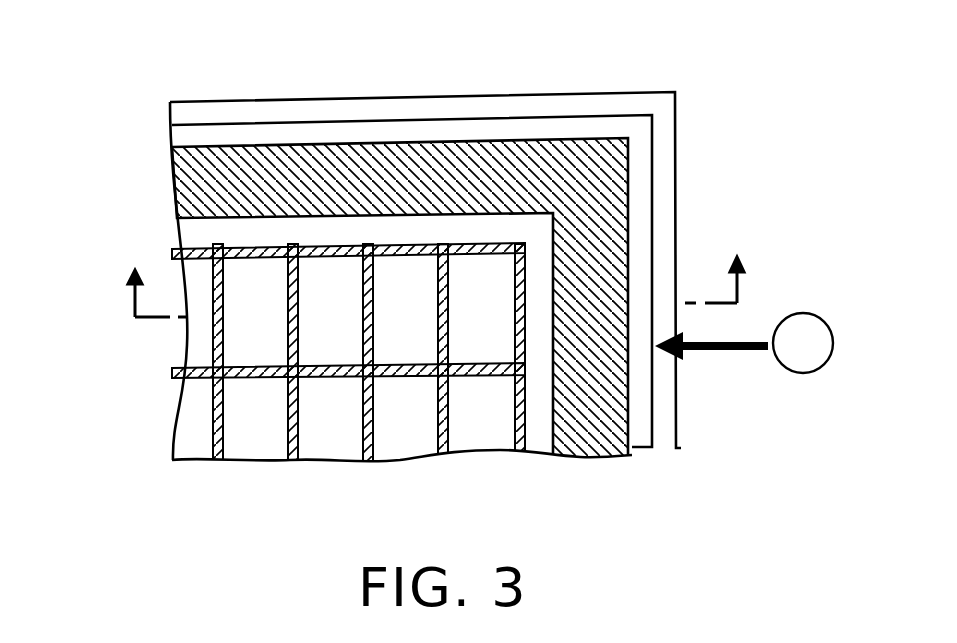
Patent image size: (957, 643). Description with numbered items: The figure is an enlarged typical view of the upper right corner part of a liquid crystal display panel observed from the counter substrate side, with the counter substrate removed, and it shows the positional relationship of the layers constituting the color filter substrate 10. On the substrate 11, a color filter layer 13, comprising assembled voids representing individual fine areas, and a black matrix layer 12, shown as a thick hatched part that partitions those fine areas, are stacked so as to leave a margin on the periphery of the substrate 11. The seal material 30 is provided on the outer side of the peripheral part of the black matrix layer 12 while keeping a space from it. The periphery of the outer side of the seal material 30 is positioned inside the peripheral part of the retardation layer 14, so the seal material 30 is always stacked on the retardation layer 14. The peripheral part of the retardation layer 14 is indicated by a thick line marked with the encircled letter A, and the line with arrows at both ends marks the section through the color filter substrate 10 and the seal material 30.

The color filter substrate 10 is at (150, 122).
The substrate 11 is at (646, 88).
The black matrix layer 12 is at (337, 383).
The color filter layer 13 is at (403, 420).
The retardation layer 14 is at (543, 248).
The seal material 30 is at (322, 160).